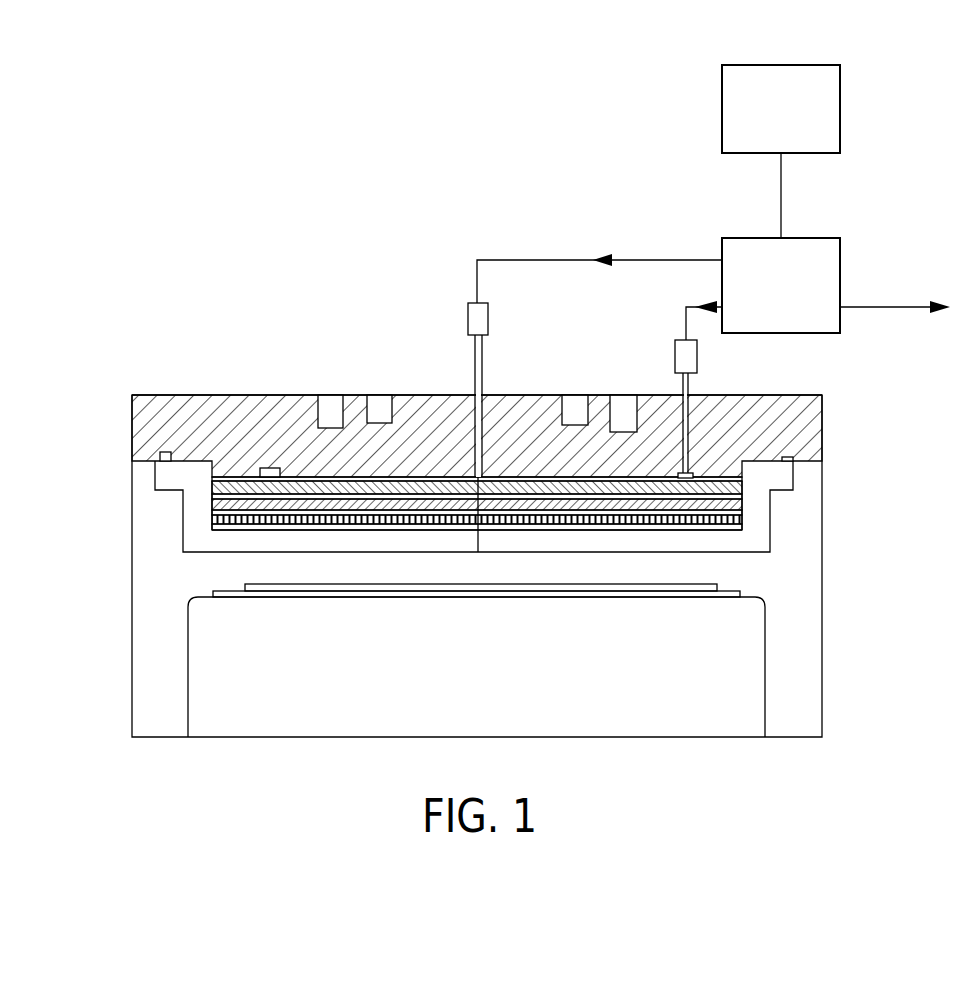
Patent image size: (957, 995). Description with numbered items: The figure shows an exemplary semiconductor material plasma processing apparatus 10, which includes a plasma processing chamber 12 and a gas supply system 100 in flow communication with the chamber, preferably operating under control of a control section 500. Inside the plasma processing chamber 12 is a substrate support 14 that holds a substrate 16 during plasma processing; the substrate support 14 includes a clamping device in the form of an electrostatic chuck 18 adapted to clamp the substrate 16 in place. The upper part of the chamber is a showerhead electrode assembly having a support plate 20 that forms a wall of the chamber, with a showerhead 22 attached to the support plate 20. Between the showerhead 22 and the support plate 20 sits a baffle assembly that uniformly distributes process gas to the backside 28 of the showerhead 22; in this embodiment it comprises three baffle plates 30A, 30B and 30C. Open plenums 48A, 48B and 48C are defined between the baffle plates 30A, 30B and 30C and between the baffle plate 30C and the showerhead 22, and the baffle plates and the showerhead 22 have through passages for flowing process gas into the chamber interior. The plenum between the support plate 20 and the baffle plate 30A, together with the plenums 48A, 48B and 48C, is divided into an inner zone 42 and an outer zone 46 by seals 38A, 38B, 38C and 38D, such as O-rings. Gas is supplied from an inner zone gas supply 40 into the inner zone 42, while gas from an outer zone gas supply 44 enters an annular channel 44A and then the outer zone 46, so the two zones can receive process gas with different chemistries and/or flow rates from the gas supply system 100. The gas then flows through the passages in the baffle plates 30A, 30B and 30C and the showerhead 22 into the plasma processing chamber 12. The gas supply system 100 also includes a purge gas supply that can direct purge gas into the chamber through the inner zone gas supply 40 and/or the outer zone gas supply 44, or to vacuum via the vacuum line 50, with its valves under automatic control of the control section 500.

The plasma processing apparatus 10 is at (377, 205).
The plasma processing chamber 12 is at (132, 692).
The substrate support 14 is at (490, 682).
The substrate 16 is at (627, 583).
The electrostatic chuck 18 is at (220, 590).
The support plate 20 is at (823, 430).
The showerhead 22 is at (717, 530).
The backside of the showerhead 28 is at (240, 530).
The baffle plate 30A is at (742, 491).
The baffle plate 30B is at (742, 507).
The baffle plate 30C is at (742, 523).
The seal 38A is at (318, 475).
The seal 38B is at (320, 505).
The seal 38C is at (345, 513).
The seal 38D is at (320, 518).
The inner zone gas supply 40 is at (472, 358).
The inner zone 42 is at (320, 490).
The outer zone gas supply 44 is at (690, 388).
The annular channel 44A is at (678, 472).
The outer zone 46 is at (245, 473).
The plenum 48A is at (212, 496).
The plenum 48B is at (212, 508).
The plenum 48C is at (212, 525).
The vacuum line 50 is at (876, 309).
The gas supply system 100 is at (841, 275).
The control section 500 is at (841, 110).